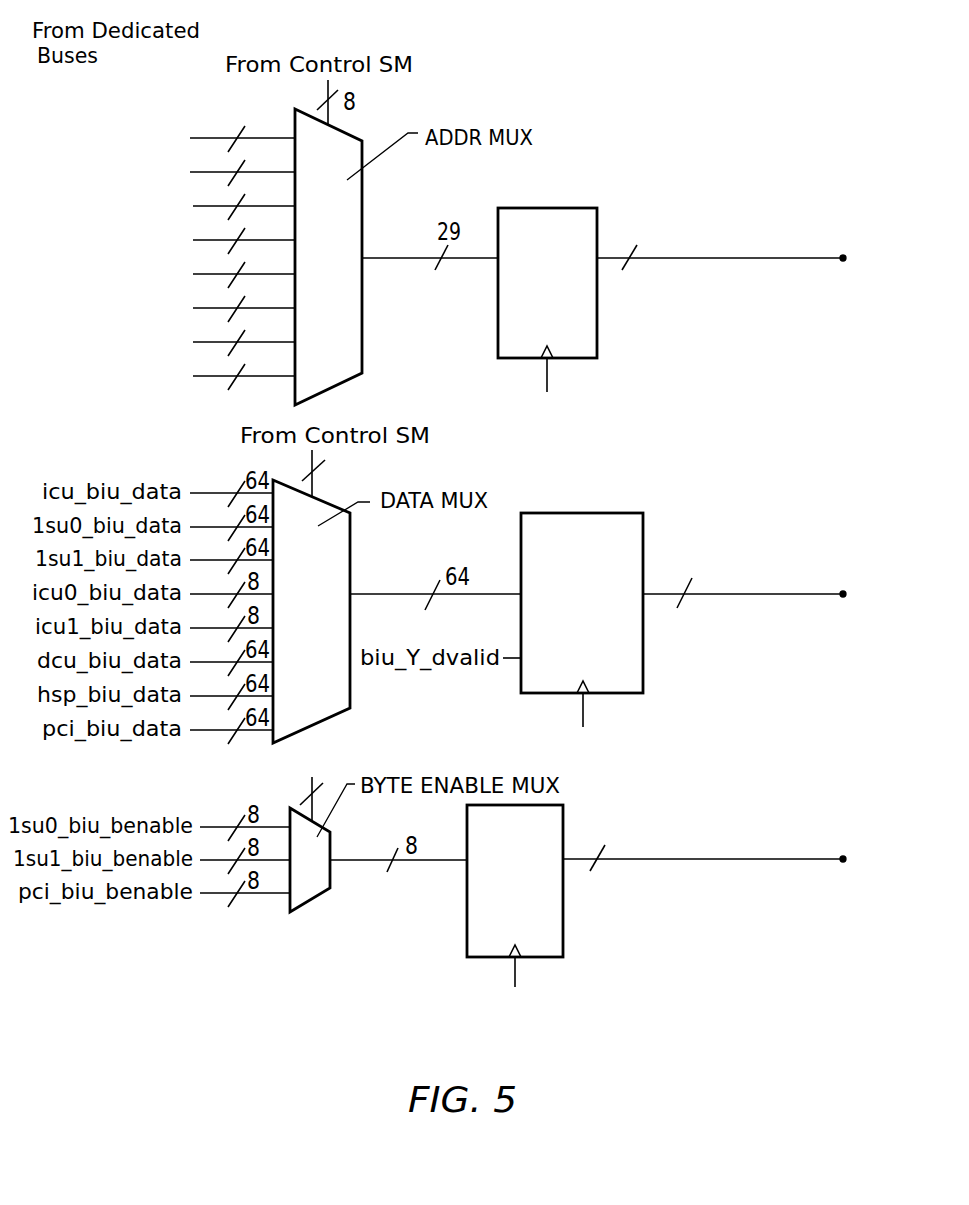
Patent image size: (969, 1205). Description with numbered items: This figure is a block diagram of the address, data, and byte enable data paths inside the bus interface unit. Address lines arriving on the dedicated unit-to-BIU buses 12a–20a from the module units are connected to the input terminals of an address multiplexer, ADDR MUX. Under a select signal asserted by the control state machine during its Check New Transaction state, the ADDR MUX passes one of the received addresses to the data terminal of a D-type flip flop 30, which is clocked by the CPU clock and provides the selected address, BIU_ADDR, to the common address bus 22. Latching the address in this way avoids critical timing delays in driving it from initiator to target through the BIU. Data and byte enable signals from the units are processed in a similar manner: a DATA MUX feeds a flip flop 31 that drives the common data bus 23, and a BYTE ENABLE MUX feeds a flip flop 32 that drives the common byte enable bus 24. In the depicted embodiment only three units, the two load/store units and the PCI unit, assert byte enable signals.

The dedicated bus 12a is at (108, 113).
The dedicated bus 20a is at (163, 216).
The common address bus 22 is at (843, 260).
The common data bus 23 is at (843, 596).
The common byte enable bus 24 is at (843, 861).
The D-type flip flop 30 is at (556, 315).
The D-type flip flop 31 is at (595, 635).
The D-type flip flop 32 is at (521, 908).